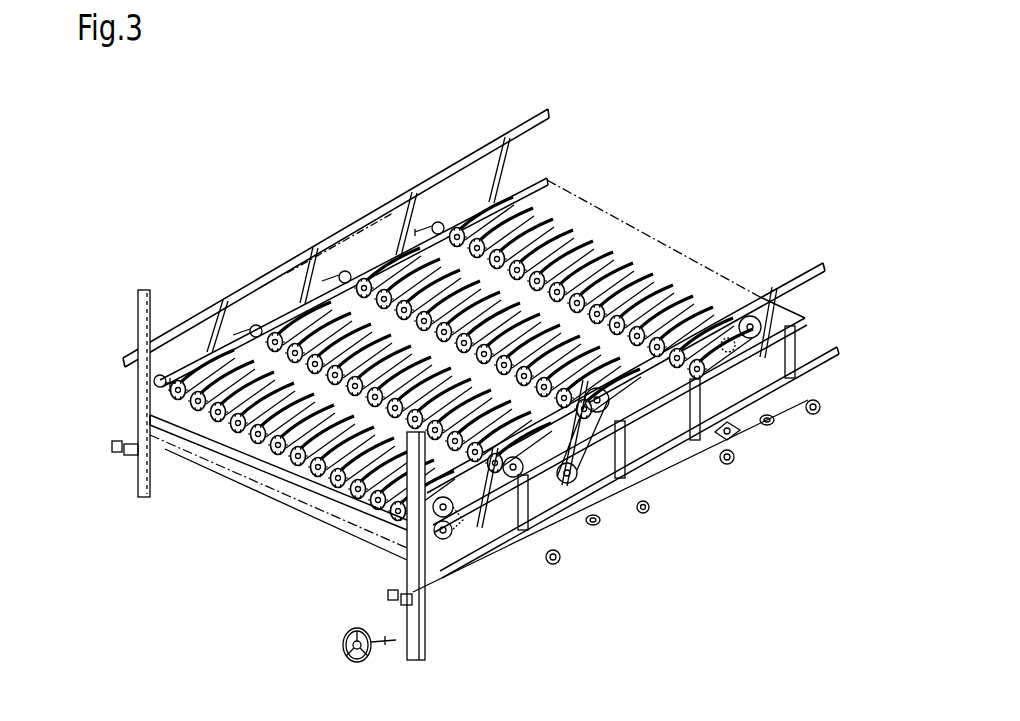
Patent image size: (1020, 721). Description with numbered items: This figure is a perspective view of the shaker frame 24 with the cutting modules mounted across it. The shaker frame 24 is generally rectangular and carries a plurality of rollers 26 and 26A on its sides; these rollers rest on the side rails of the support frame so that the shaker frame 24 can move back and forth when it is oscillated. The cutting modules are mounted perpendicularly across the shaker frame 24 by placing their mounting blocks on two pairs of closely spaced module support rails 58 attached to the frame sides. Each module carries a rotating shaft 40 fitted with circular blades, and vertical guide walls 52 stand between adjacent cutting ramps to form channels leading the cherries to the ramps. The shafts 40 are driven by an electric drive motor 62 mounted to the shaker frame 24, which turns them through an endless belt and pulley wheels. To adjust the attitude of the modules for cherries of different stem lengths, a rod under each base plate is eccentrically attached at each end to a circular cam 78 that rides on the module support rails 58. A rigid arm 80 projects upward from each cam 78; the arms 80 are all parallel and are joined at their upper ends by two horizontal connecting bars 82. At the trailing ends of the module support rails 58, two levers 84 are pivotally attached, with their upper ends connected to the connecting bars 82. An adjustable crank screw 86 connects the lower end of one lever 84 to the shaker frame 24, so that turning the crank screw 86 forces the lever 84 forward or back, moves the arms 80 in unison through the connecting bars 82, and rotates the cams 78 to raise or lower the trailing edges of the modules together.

The shaker frame 24 is at (232, 478).
The rollers 26 is at (557, 567).
The rollers 26A is at (607, 523).
The rotating shaft 40 is at (140, 330).
The vertical guide walls 52 is at (590, 220).
The module support rails 58 is at (140, 427).
The electric drive motor 62 is at (727, 430).
The circular cam 78 is at (477, 533).
The rigid arm 80 is at (387, 210).
The horizontal connecting bars 82 is at (548, 112).
The levers 84 is at (400, 550).
The adjustable crank screw 86 is at (345, 659).